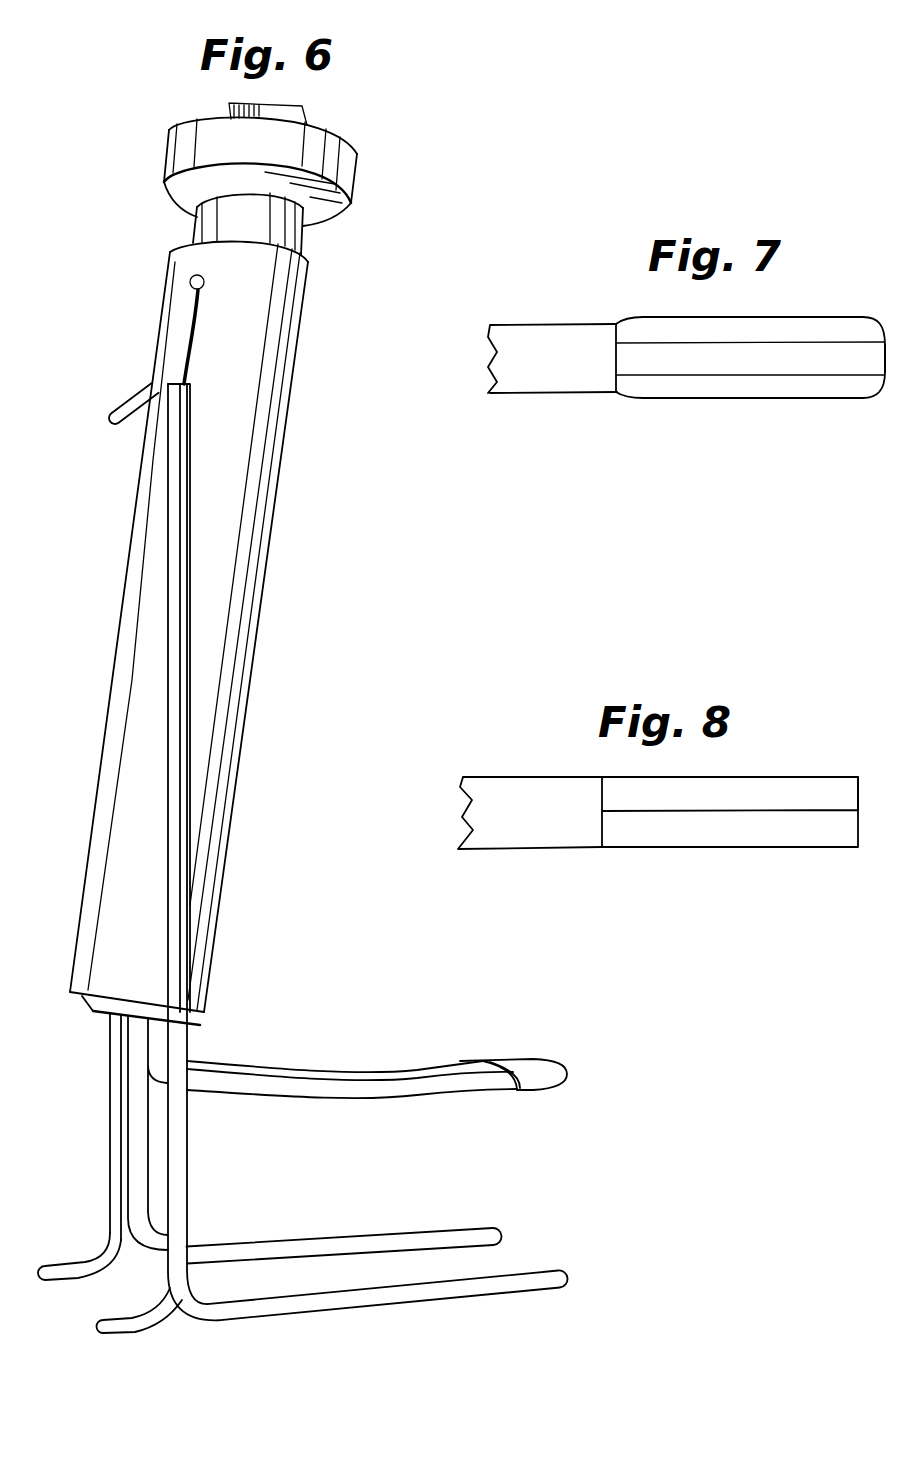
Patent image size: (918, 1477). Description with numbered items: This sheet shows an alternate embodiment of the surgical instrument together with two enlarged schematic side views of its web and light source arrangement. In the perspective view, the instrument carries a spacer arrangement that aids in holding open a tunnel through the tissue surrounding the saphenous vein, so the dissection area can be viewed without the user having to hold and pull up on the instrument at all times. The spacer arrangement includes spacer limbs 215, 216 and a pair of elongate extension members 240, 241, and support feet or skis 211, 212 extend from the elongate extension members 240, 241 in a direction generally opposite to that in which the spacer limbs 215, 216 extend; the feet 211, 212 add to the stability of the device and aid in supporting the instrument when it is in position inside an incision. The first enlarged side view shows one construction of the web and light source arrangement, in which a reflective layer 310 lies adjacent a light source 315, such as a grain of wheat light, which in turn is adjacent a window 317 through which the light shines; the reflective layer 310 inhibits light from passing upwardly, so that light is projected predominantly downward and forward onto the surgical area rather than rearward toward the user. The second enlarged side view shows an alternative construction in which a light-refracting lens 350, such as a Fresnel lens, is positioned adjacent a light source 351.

In FIG. 6, the elongate extension member 240 is at (110, 1125).
In FIG. 6, the elongate extension member 241 is at (190, 1128).
In FIG. 6, the support foot 211 is at (73, 1258).
In FIG. 6, the support foot 212 is at (130, 1320).
In FIG. 6, the spacer limb 215 is at (407, 1235).
In FIG. 6, the spacer limb 216 is at (312, 1300).
In FIG. 7, the reflective layer 310 is at (883, 320).
In FIG. 7, the light source 315 is at (885, 363).
In FIG. 7, the window 317 is at (883, 393).
In FIG. 8, the light-refracting lens 350 is at (858, 823).
In FIG. 8, the light source 351 is at (862, 790).